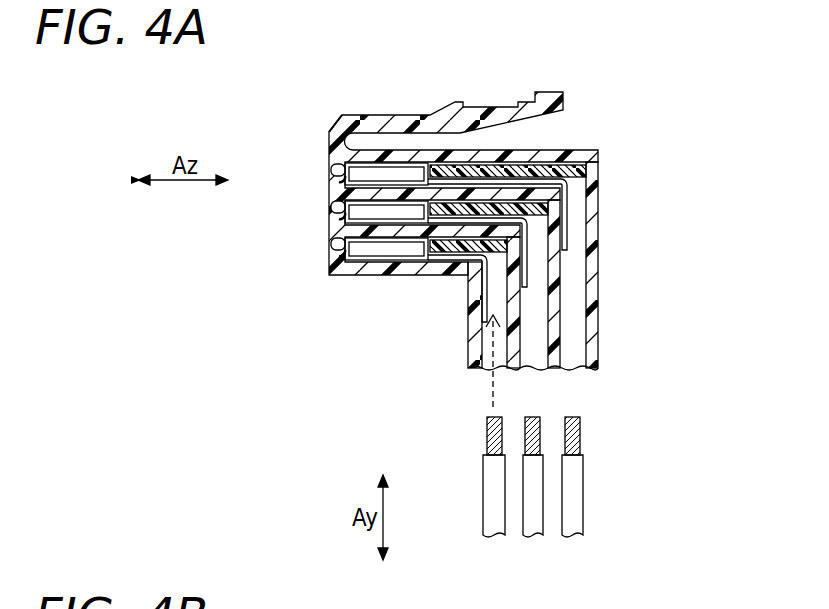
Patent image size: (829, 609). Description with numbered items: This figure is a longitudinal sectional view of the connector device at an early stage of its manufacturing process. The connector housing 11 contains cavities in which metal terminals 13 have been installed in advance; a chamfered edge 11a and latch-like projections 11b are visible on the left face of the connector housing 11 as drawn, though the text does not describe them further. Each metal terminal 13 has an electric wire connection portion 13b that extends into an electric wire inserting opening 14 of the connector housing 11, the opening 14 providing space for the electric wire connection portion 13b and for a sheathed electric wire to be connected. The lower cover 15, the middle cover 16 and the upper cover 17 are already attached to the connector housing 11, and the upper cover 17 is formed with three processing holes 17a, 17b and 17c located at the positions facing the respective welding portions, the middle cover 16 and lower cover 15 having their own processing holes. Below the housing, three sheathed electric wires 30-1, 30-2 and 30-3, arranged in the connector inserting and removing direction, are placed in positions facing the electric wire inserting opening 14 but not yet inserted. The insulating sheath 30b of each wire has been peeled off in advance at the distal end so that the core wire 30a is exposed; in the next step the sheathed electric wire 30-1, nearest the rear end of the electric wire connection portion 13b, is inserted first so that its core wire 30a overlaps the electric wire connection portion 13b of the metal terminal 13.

The connector housing 11 is at (392, 123).
The housing chamfered corner 11a is at (329, 131).
The housing latch projections 11b is at (329, 247).
The metal terminal 13 is at (355, 252).
The electric wire connection portion 13b is at (470, 268).
The electric wire inserting opening 14 is at (483, 342).
The lower cover 15 is at (510, 369).
The middle cover 16 is at (550, 369).
The upper cover 17 is at (552, 265).
The processing hole 17a is at (590, 307).
The processing hole 17b is at (597, 268).
The processing hole 17c is at (594, 232).
The core wire 30a is at (487, 430).
The insulating sheath 30b is at (489, 487).
The sheathed electric wire 30-1 is at (489, 517).
The sheathed electric wire 30-2 is at (533, 525).
The sheathed electric wire 30-3 is at (577, 498).